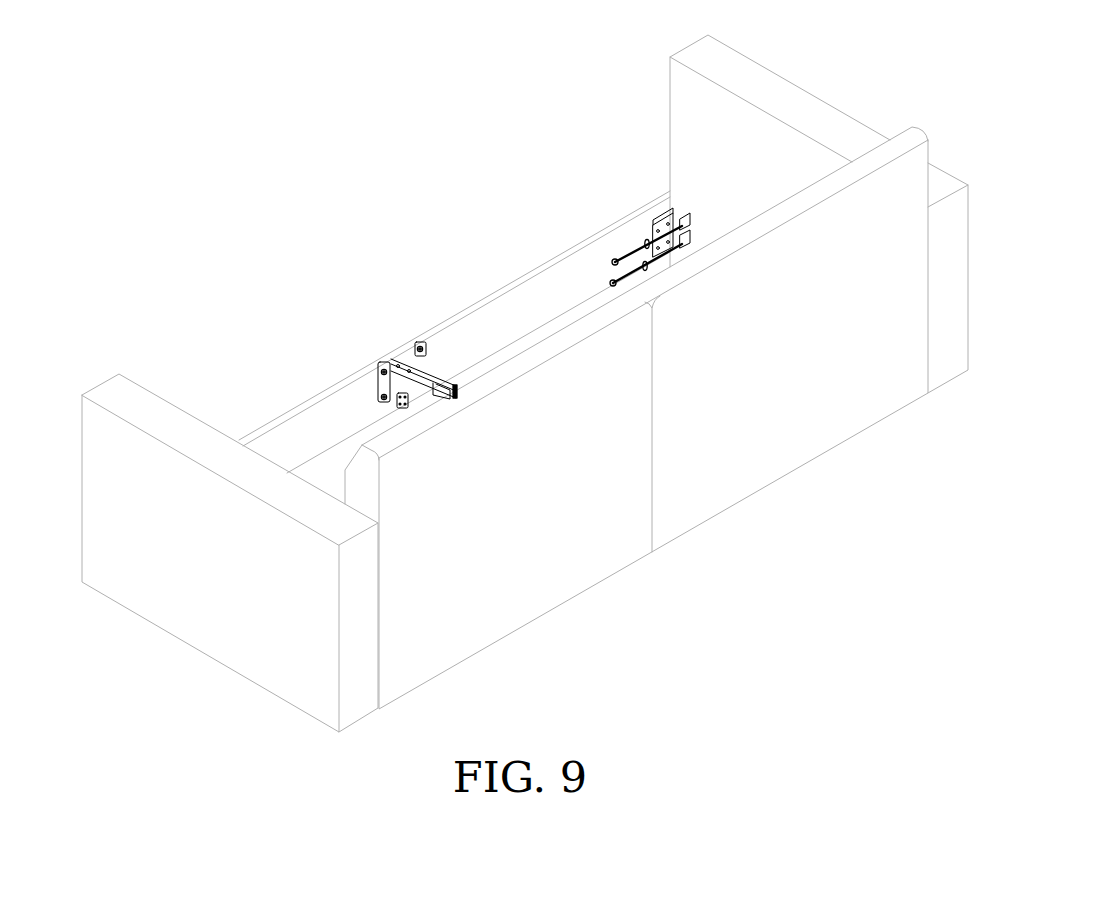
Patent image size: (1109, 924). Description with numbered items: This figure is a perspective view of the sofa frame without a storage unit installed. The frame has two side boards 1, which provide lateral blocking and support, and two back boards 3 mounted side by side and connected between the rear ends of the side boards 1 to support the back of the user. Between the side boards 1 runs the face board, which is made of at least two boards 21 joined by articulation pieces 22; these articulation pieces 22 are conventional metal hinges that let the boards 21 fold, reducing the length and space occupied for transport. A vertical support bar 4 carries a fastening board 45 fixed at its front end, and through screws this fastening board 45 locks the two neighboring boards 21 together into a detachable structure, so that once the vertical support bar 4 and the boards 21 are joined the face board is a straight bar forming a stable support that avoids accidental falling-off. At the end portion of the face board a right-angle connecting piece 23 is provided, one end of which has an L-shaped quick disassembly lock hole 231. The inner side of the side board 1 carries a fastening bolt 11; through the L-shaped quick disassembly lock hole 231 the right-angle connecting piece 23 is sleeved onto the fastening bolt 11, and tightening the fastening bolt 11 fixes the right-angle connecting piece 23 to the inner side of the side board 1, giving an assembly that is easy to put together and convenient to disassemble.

The side board 1 is at (744, 52).
The back board 3 is at (800, 455).
The board 21 is at (297, 408).
The articulation piece 22 is at (397, 406).
The right-angle connecting piece 23 is at (657, 221).
The L-shaped quick disassembly lock hole 231 is at (673, 200).
The vertical support bar 4 is at (390, 353).
The fastening board 45 is at (379, 380).
The fastening bolt 11 is at (617, 262).